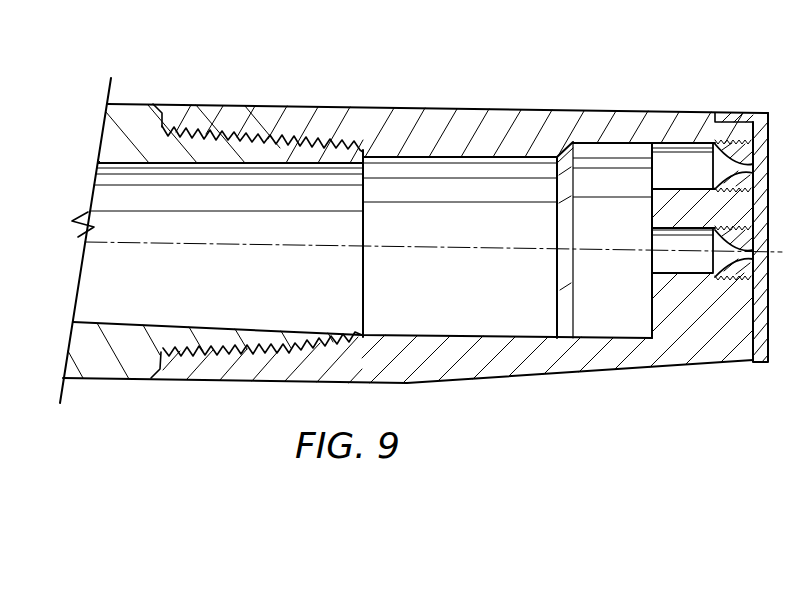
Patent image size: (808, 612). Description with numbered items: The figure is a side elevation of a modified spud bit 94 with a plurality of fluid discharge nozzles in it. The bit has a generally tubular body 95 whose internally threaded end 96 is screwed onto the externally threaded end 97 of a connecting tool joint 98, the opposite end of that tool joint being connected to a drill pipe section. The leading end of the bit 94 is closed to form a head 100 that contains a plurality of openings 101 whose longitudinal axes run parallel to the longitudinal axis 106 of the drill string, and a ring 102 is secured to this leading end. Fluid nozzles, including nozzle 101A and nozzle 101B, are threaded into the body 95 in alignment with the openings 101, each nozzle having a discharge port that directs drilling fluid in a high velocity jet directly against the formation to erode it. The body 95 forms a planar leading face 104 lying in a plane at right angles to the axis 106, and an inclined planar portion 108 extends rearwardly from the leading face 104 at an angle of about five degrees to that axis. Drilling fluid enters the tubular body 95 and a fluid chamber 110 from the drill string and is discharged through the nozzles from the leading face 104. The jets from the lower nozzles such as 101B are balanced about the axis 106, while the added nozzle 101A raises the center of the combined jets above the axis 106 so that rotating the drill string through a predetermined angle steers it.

The spud bit 94 is at (610, 82).
The tubular body 95 is at (433, 112).
The internally threaded end 96 is at (262, 143).
The externally threaded end 97 is at (228, 164).
The connecting tool joint 98 is at (137, 120).
The head 100 is at (654, 210).
The openings 101 is at (657, 176).
The fluid nozzle 101A is at (760, 146).
The fluid nozzle 101B is at (760, 236).
The ring 102 is at (739, 113).
The planar leading face 104 is at (758, 198).
The longitudinal axis 106 is at (439, 249).
The inclined planar portion 108 is at (608, 372).
The fluid chamber 110 is at (590, 150).